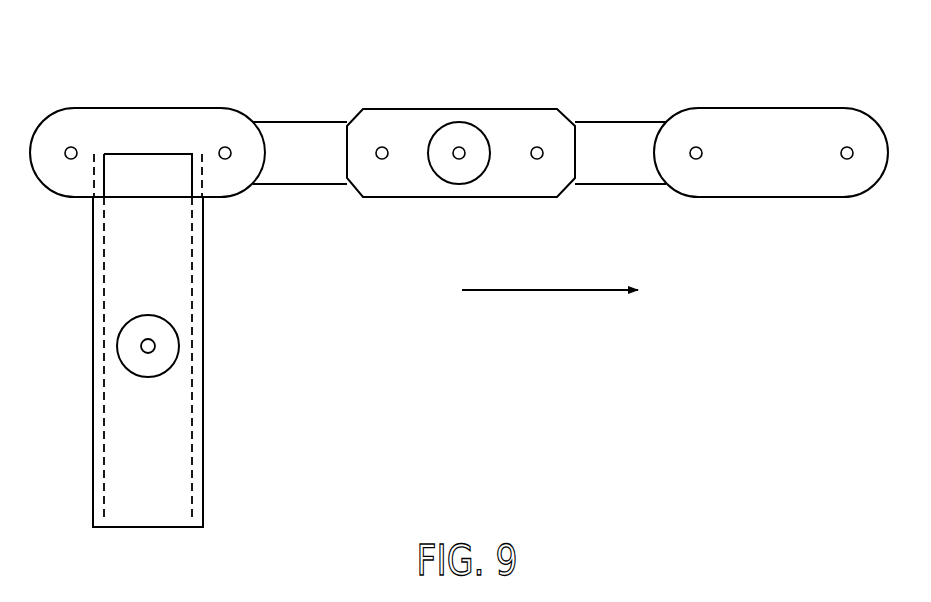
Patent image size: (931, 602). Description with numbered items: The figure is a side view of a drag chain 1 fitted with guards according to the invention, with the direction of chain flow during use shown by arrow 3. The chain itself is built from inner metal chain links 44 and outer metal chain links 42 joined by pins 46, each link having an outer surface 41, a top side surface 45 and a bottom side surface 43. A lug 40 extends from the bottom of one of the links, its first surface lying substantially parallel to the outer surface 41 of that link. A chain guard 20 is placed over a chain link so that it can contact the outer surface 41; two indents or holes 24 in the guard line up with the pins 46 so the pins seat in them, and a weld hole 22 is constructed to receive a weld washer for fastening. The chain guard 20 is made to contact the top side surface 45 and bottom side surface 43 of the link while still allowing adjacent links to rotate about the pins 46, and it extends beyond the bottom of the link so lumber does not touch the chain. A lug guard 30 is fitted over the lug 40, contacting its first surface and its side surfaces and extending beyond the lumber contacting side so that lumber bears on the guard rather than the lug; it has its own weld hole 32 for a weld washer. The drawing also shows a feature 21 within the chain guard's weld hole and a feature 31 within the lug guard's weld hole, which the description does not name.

The drag chain 1 is at (147, 172).
The arrow 3 is at (548, 291).
The chain guard 20 is at (490, 198).
The pin hole 21 is at (468, 135).
The weld hole 22 is at (442, 124).
The indents or holes 24 is at (382, 146).
The lug guard 30 is at (203, 375).
The pin 31 is at (158, 347).
The weld hole 32 is at (148, 377).
The lug 40 is at (153, 167).
The outer surface 41 is at (771, 187).
The outer metal chain link 42 is at (771, 187).
The bottom side surface 43 is at (733, 203).
The inner metal chain link 44 is at (623, 133).
The top side surface 45 is at (771, 153).
The pin 46 is at (694, 146).